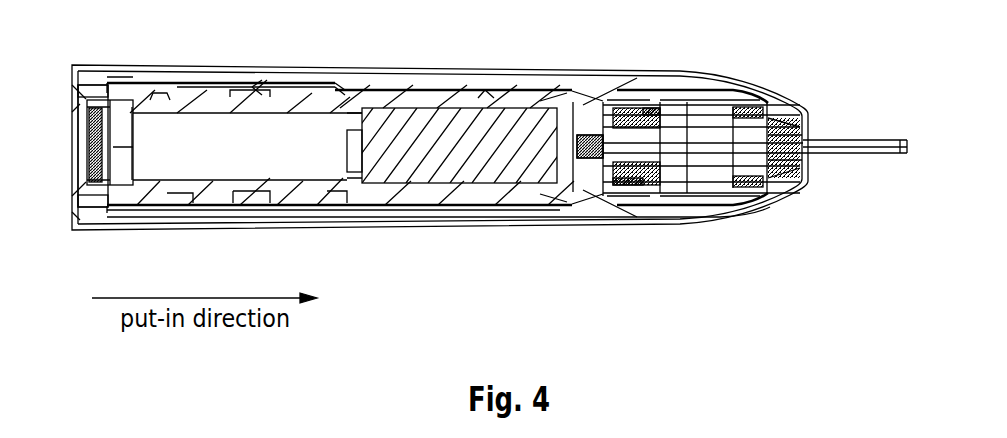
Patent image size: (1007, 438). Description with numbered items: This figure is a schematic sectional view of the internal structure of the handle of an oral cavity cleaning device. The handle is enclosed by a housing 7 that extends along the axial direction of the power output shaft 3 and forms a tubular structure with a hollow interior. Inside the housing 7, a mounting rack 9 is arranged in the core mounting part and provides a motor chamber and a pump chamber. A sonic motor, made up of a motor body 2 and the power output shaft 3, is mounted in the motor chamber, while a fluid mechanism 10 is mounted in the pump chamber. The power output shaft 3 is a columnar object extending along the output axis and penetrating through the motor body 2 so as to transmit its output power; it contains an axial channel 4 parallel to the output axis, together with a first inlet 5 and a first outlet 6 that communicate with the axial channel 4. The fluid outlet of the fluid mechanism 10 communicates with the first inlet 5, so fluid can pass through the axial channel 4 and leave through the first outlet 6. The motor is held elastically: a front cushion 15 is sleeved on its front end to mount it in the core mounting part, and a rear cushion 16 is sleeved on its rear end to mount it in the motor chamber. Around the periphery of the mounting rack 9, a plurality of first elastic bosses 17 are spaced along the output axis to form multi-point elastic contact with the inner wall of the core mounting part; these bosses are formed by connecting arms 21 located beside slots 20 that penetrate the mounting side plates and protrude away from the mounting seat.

The motor body 2 is at (702, 118).
The power output shaft 3 is at (838, 157).
The axial channel 4 is at (702, 110).
The first inlet 5 is at (603, 158).
The first outlet 6 is at (898, 157).
The housing 7 is at (445, 222).
The mounting rack 9 is at (485, 90).
The fluid mechanism 10 is at (422, 182).
The front cushion 15 is at (757, 185).
The rear cushion 16 is at (652, 186).
The first elastic bosses 17 is at (252, 87).
The slots 20 is at (343, 97).
The connecting arms 21 is at (425, 87).